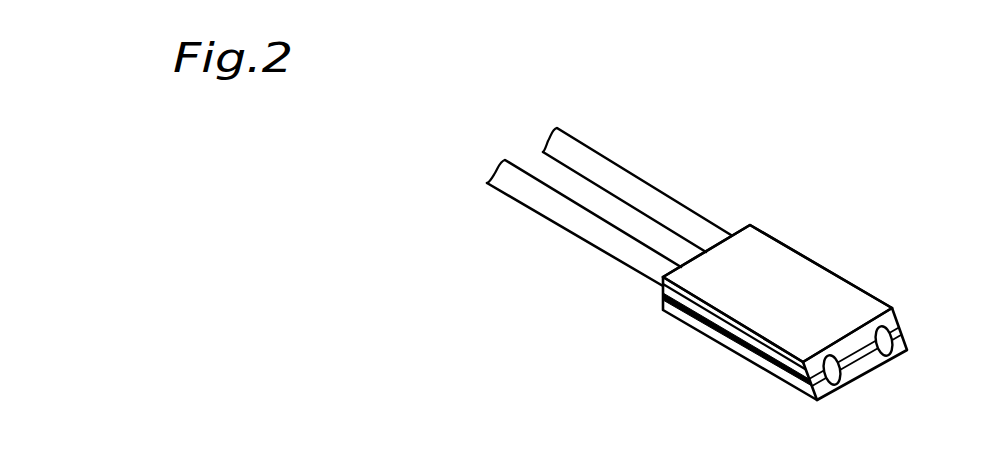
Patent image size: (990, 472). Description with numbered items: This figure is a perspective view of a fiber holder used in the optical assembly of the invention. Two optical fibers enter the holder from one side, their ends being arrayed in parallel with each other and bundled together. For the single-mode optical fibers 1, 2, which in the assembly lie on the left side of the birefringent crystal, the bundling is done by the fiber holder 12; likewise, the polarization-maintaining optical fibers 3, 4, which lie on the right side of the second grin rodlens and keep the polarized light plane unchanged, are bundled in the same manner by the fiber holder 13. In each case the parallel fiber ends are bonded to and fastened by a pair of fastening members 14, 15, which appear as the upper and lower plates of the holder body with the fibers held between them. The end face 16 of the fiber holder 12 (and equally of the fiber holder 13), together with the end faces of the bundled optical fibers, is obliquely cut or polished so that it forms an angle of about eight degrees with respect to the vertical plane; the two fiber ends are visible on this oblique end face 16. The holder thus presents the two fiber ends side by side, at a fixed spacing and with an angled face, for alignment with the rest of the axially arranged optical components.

The single-mode optical fiber 1 is at (637, 187).
The polarization-maintaining optical fiber 3 is at (652, 198).
The single-mode optical fiber 2 is at (584, 228).
The polarization-maintaining optical fiber 4 is at (583, 222).
The fiber holder 12 is at (777, 274).
The fiber holder 13 is at (792, 267).
The fastening member 14 is at (835, 305).
The fastening member 15 is at (717, 335).
The end face 16 is at (863, 363).